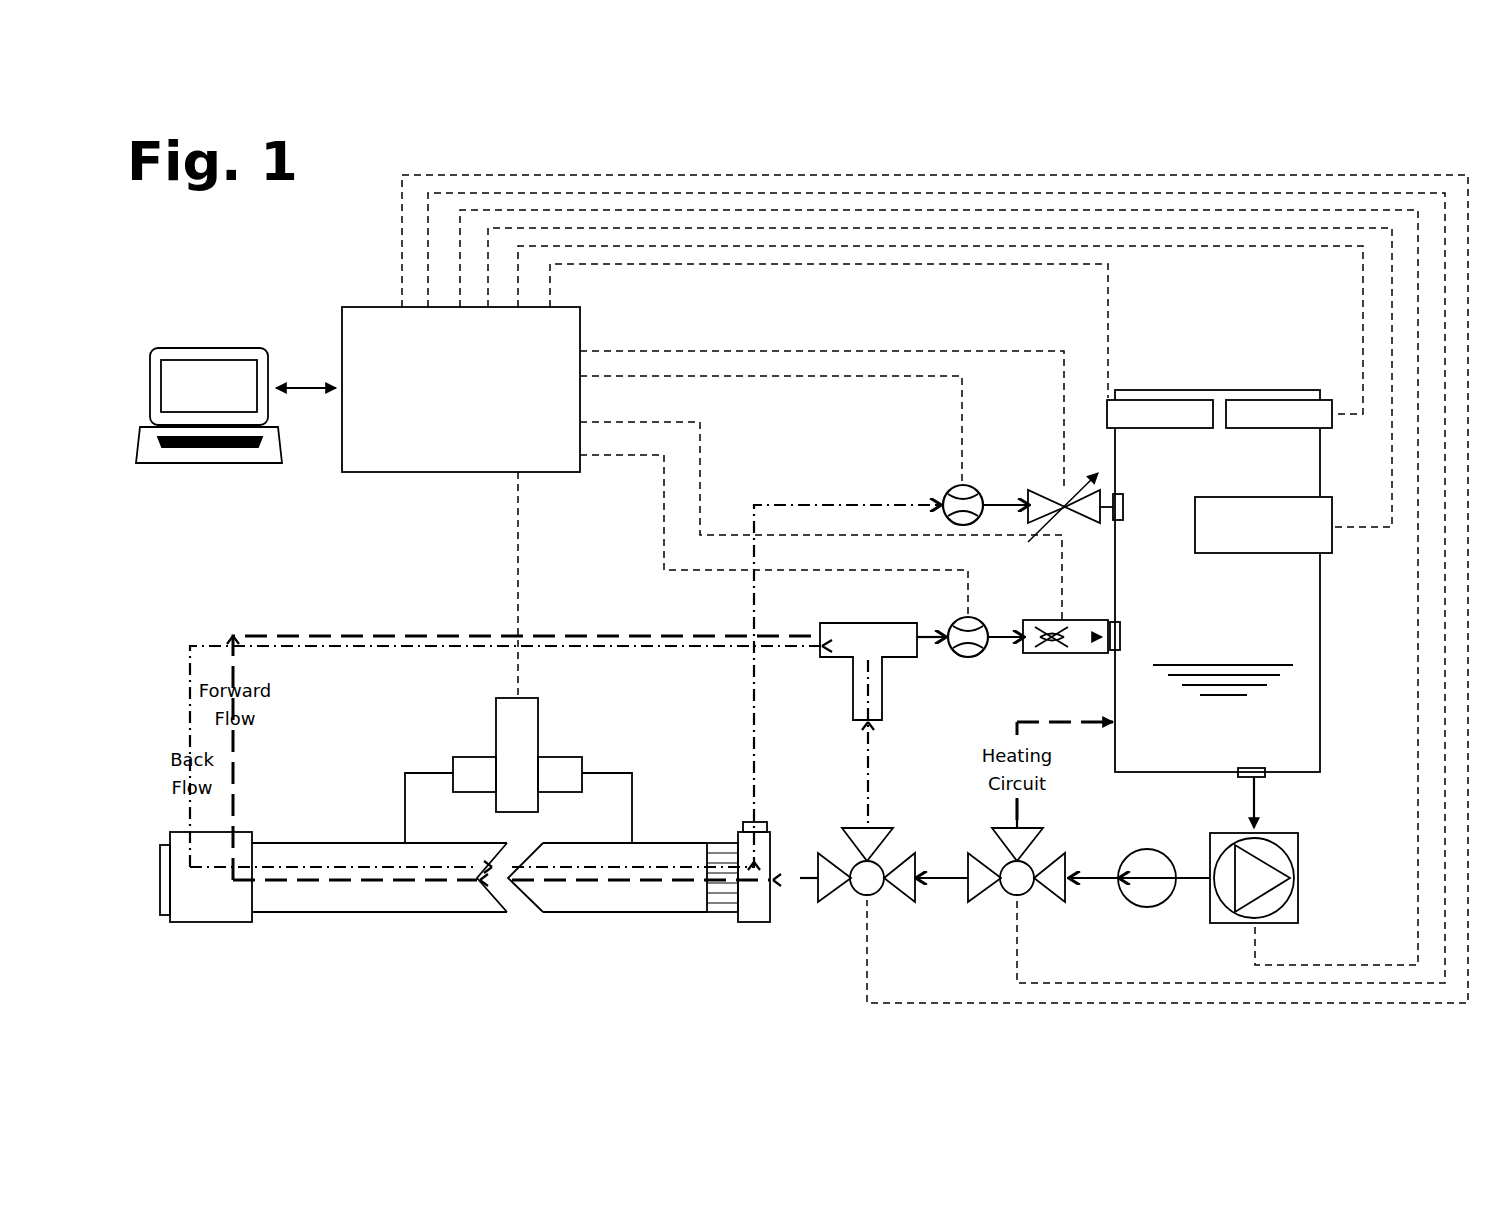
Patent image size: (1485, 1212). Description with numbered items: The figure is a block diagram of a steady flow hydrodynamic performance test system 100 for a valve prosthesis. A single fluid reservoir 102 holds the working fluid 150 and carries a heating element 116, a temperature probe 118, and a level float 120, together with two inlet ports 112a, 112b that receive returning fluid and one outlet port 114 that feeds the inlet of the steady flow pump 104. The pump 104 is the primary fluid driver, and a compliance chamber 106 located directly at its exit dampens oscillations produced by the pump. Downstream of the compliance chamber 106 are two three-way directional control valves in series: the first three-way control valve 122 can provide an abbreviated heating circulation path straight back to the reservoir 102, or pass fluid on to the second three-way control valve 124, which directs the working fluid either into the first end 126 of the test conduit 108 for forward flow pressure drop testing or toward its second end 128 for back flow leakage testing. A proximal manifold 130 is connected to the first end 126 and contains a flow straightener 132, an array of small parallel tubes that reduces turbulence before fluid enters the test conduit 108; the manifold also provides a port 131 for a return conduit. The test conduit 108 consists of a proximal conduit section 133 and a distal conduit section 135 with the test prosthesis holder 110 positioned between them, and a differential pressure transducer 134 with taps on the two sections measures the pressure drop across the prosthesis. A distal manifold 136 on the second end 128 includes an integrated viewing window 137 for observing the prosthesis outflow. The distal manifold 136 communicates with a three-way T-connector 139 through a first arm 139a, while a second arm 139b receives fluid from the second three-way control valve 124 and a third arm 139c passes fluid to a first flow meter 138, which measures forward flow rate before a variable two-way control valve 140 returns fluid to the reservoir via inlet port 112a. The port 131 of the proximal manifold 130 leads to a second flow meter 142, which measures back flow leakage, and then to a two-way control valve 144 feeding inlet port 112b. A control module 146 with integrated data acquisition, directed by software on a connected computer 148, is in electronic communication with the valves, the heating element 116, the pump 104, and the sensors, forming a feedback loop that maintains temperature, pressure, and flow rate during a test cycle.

The test system 100 is at (338, 262).
The fluid reservoir 102 is at (1290, 772).
The steady flow pump 104 is at (1298, 895).
The compliance chamber 106 is at (1147, 907).
The test conduit 108 is at (432, 912).
The test prosthesis holder 110 is at (500, 912).
The inlet port 112a is at (1112, 652).
The inlet port 112b is at (1114, 494).
The outlet port 114 is at (1238, 777).
The heating element 116 is at (1323, 553).
The temperature probe 118 is at (1190, 400).
The level float 120 is at (1302, 400).
The first 3-way control valve 122 is at (997, 830).
The second 3-way control valve 124 is at (912, 902).
The first end of the test conduit 126 is at (772, 930).
The second end of the test conduit 128 is at (185, 927).
The proximal manifold 130 is at (752, 922).
The port 131 is at (760, 822).
The flow straightener 132 is at (720, 843).
The proximal conduit section 133 is at (625, 918).
The differential pressure transducer 134 is at (496, 727).
The distal conduit section 135 is at (345, 842).
The distal manifold 136 is at (237, 922).
The viewing window 137 is at (165, 845).
The first flow meter 138 is at (968, 657).
The 3-way T-connector 139 is at (853, 623).
The first arm 139a is at (838, 657).
The second arm 139b is at (853, 695).
The third arm 139c is at (895, 657).
The variable 2-way control valve 140 is at (1045, 620).
The second flow meter 142 is at (948, 492).
The 2-way control valve 144 is at (1062, 490).
The control module 146 is at (388, 472).
The computer 148 is at (214, 348).
The working fluid 150 is at (1293, 665).